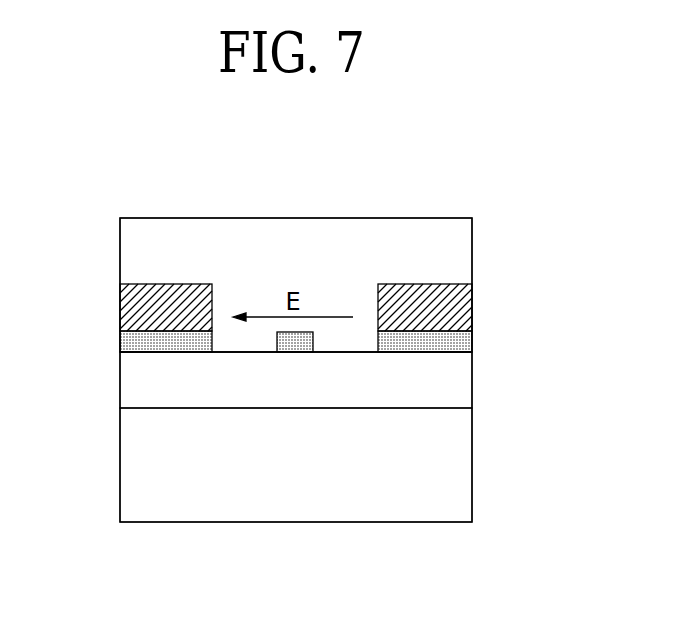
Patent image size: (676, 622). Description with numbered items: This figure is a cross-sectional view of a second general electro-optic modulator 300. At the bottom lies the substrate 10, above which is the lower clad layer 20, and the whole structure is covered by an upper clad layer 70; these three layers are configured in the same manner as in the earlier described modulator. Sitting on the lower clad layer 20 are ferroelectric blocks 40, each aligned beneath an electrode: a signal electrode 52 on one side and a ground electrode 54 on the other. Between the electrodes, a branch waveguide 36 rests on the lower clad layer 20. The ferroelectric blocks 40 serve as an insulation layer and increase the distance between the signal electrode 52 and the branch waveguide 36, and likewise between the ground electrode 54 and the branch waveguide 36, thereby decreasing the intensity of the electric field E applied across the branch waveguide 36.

The second general electro-optic modulator 300 is at (441, 201).
The upper clad layer 70 is at (455, 257).
The ground electrode 54 is at (125, 304).
The signal electrode 52 is at (457, 307).
The ferroelectric blocks 40 is at (457, 342).
The branch waveguide 36 is at (298, 345).
The lower clad layer 20 is at (455, 380).
The substrate 10 is at (455, 467).